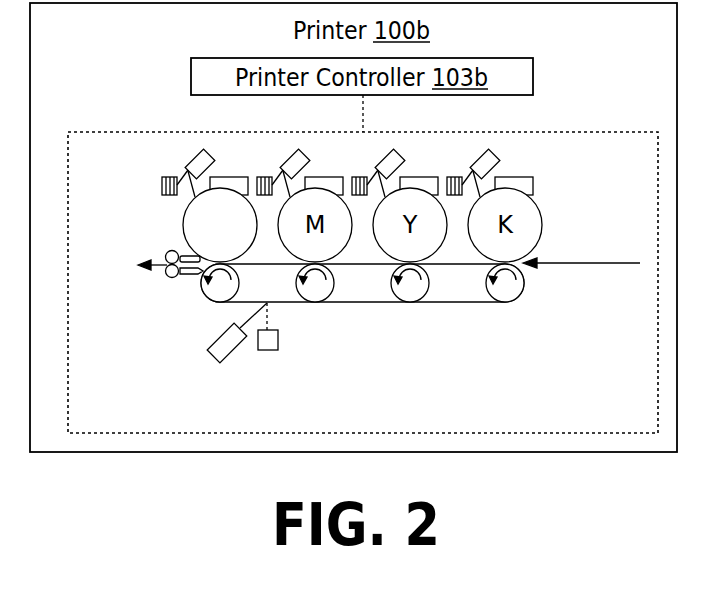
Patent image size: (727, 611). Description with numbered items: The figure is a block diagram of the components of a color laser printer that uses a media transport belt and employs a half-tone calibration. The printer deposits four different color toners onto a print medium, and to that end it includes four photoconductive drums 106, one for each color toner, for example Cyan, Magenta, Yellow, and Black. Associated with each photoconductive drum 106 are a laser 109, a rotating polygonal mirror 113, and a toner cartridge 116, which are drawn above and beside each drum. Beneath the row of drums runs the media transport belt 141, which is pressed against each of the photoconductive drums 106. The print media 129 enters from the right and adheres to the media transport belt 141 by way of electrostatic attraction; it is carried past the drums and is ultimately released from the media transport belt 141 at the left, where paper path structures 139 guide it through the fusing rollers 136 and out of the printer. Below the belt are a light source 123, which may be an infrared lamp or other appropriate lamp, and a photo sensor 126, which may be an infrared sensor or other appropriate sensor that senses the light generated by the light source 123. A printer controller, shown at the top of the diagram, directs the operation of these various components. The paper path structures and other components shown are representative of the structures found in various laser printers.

The photoconductive drum 106 is at (184, 231).
The laser 109 is at (206, 157).
The rotating polygonal mirror 113 is at (453, 176).
The toner cartridge 116 is at (320, 176).
The light source 123 is at (233, 352).
The photo sensor 126 is at (278, 340).
The print media 129 is at (600, 263).
The fusing rollers 136 is at (166, 253).
The paper path structures 139 is at (188, 275).
The media transport belt 141 is at (375, 302).